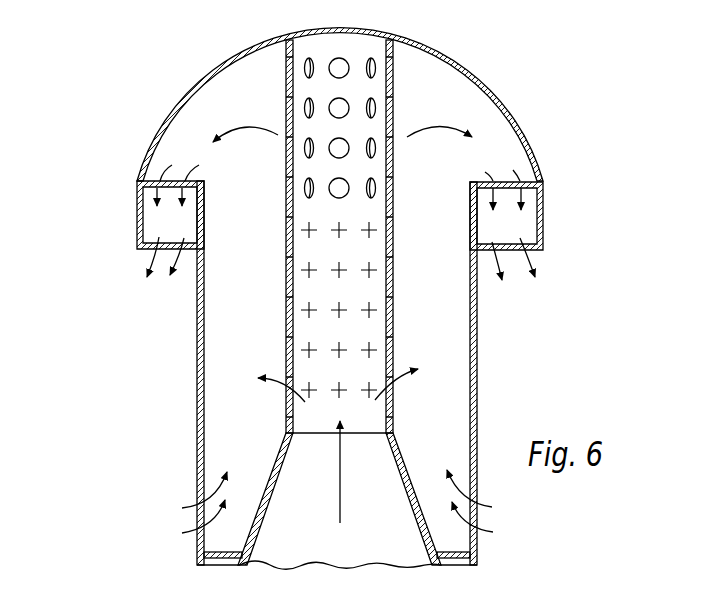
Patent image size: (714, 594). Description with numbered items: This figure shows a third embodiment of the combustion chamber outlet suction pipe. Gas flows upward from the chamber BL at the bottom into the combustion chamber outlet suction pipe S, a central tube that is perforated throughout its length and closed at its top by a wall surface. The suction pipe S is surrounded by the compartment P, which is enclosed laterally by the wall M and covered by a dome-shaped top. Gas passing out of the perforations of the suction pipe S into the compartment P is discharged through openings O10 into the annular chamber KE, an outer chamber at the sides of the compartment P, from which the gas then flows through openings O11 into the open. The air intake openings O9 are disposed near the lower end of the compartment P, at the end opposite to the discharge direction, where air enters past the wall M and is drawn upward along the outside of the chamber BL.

The compartment P is at (460, 92).
The vessel mantle wall M is at (477, 352).
The annular chamber KE is at (152, 218).
The combustion chamber outlet suction pipe S is at (358, 261).
The chamber BL is at (386, 521).
The openings O10 is at (497, 185).
The openings O11 is at (168, 258).
The air intake openings O9 is at (517, 530).